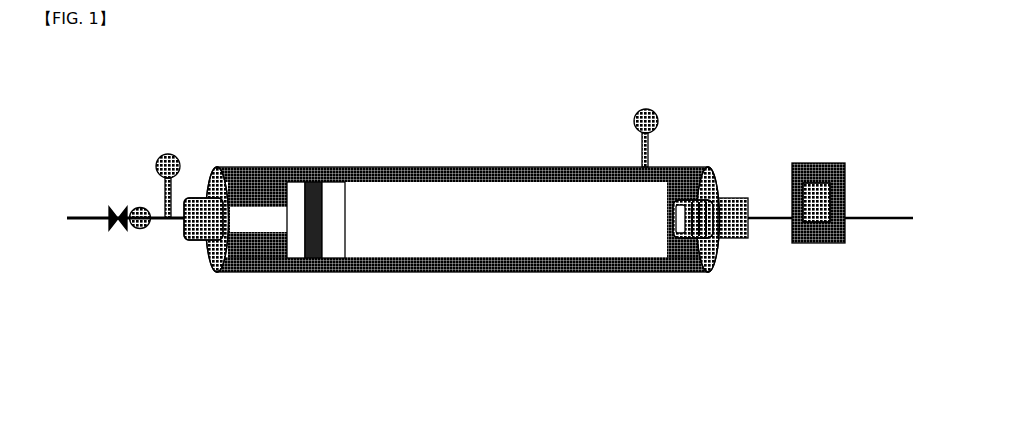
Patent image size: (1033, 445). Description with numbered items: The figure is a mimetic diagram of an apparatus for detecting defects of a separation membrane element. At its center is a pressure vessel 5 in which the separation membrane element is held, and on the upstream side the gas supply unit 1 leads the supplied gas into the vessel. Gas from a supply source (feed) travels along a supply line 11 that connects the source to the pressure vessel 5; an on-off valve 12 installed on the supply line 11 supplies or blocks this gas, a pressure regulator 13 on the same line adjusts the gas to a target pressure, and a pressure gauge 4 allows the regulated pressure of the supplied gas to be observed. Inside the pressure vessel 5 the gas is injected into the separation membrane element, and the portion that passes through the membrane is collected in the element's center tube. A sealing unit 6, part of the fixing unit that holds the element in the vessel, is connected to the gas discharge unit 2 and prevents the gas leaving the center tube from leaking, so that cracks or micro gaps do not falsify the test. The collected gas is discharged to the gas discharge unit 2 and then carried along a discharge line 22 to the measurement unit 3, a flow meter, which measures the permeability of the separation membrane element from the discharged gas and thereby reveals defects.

The gas supply unit 1 is at (207, 240).
The supply line 11 is at (87, 218).
The on-off valve 12 is at (118, 208).
The pressure regulator 13 is at (140, 207).
The pressure gauge 4 is at (168, 154).
The pressure vessel 5 is at (287, 165).
The sealing unit 6 is at (705, 167).
The gas discharge unit 2 is at (737, 240).
The discharge line 22 is at (758, 218).
The measurement unit 3 is at (823, 243).